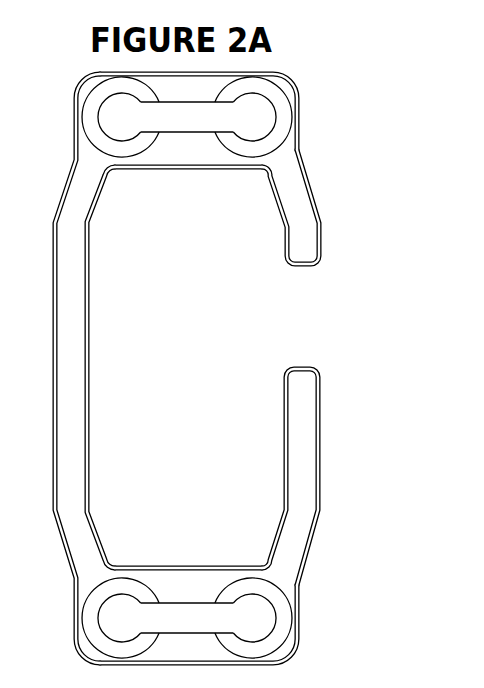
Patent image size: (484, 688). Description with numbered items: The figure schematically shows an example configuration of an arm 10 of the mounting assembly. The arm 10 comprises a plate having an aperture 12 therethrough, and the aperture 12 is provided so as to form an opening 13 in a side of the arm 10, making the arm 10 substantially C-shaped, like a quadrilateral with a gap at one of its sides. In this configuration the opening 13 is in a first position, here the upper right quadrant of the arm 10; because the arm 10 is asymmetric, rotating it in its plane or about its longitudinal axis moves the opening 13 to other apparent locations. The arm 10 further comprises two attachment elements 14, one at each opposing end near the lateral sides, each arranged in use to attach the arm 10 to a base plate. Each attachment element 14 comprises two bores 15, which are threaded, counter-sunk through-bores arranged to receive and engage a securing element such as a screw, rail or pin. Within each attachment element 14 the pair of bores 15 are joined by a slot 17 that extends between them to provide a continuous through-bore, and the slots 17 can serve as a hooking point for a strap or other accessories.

The arm 10 is at (265, 358).
The aperture 12 is at (188, 367).
The opening 13 is at (308, 315).
The attachment element 14 is at (90, 158).
The bore 15 is at (262, 123).
The slot 17 is at (185, 112).